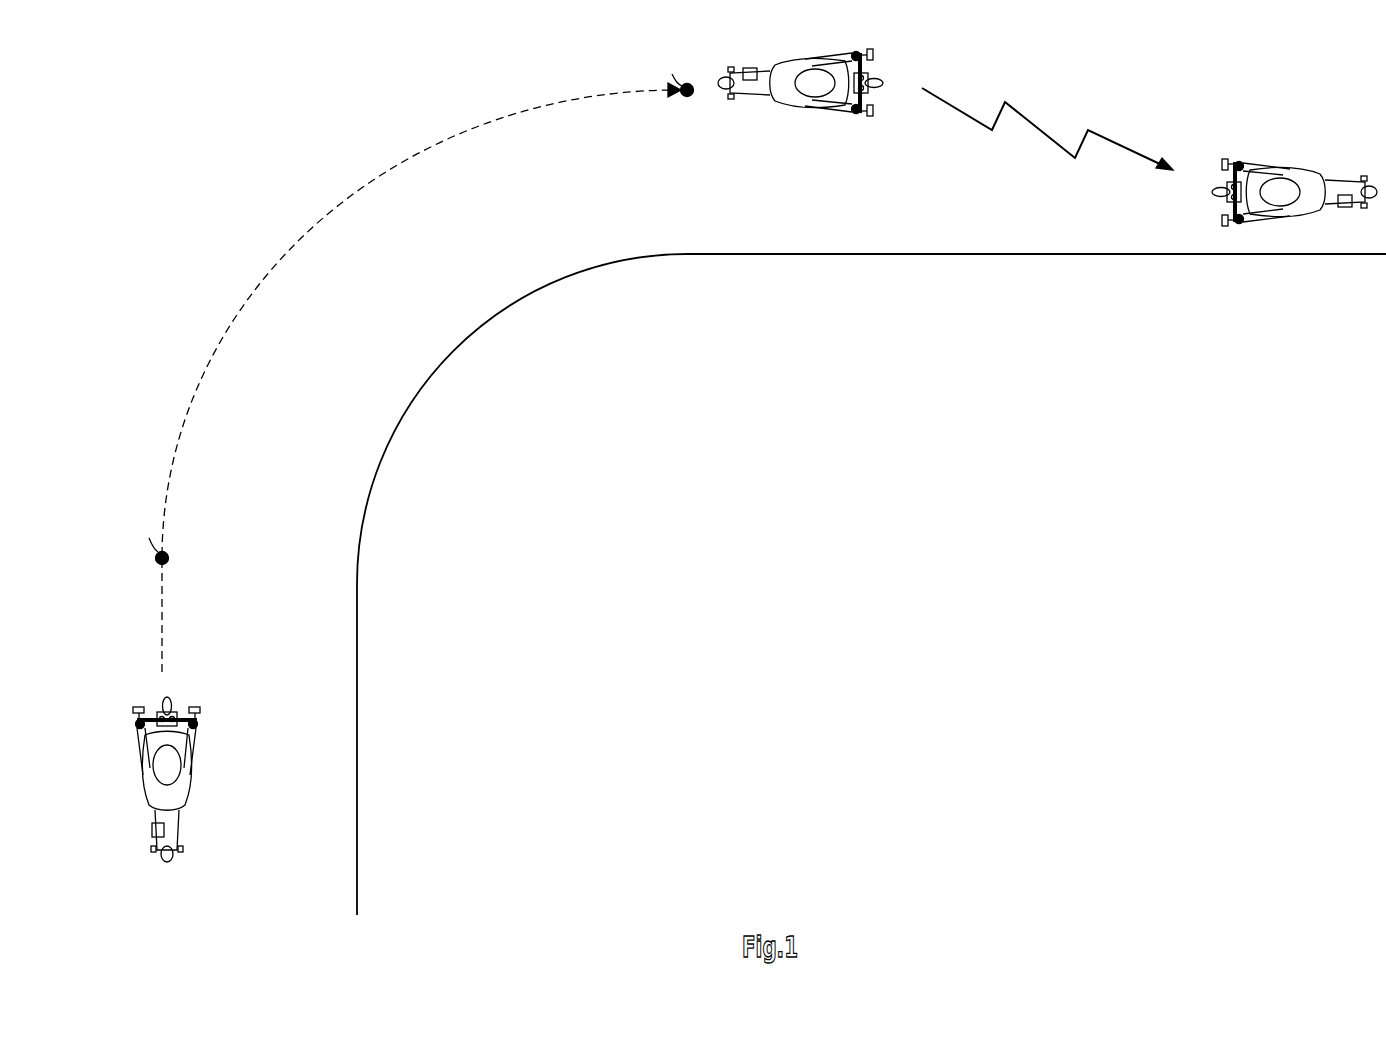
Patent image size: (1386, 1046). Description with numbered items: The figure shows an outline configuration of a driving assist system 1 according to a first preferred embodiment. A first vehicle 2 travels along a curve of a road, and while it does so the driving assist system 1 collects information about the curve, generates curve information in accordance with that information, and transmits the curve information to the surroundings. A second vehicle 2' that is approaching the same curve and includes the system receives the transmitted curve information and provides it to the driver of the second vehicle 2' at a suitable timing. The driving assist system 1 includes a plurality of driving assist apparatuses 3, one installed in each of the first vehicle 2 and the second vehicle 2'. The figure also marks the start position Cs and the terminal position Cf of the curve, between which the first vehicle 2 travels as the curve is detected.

The driving assist system 1 is at (224, 101).
The first vehicle 2 is at (508, 455).
The second vehicle 2' is at (1281, 182).
The driving assist apparatus 3 is at (156, 832).